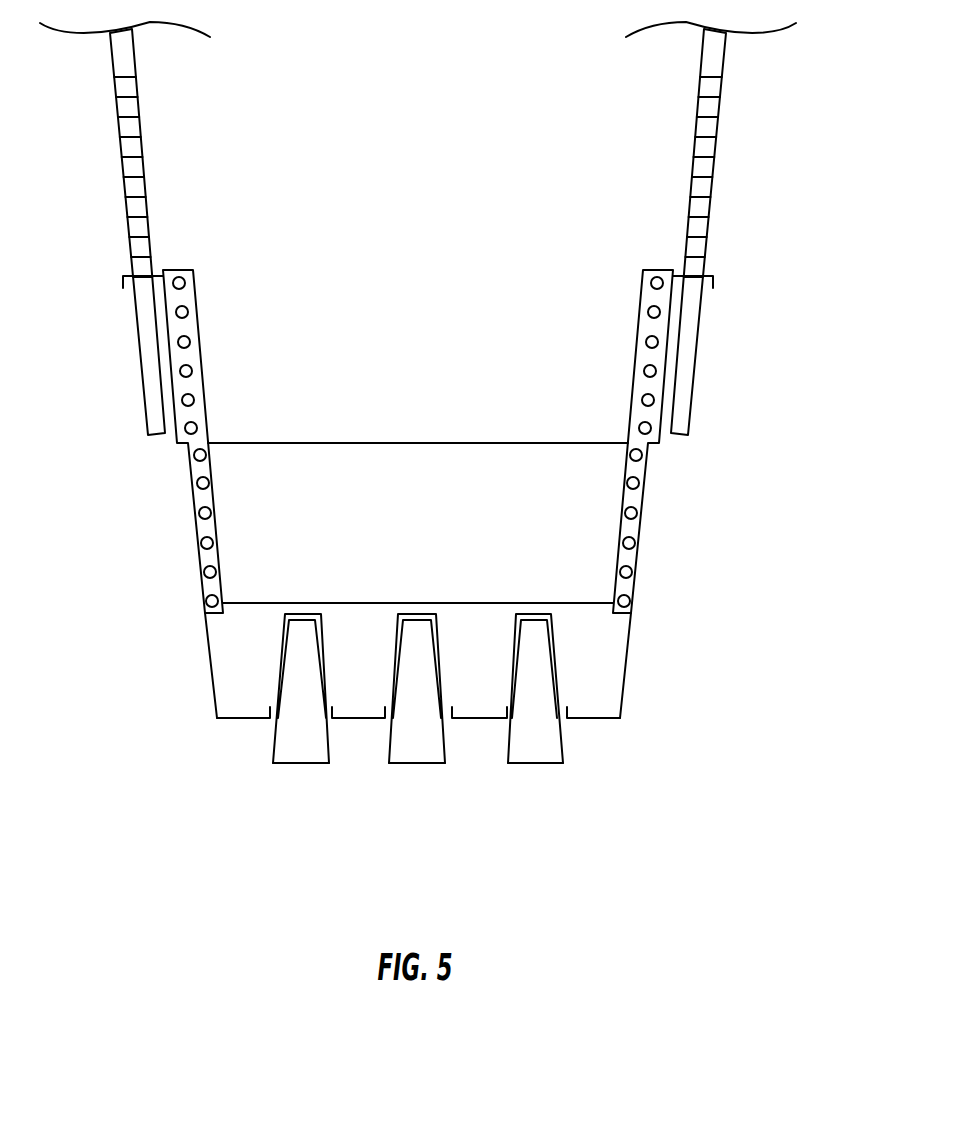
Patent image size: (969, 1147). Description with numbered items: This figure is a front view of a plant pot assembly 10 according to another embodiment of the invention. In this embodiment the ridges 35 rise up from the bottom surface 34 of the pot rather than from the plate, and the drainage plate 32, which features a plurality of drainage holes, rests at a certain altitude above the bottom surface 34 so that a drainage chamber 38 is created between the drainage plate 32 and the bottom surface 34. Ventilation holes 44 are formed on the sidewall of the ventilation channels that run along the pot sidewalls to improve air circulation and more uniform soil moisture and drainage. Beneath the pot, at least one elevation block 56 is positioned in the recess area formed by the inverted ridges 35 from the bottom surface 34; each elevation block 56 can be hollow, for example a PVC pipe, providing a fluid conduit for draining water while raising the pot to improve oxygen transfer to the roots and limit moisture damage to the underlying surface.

The plant pot assembly 10 is at (614, 207).
The drainage plate 32 is at (435, 603).
The bottom surface 34 is at (243, 720).
The ridges 35 is at (302, 613).
The drainage chamber 38 is at (222, 672).
The ventilation holes 44 is at (198, 515).
The elevation block 56 is at (532, 763).